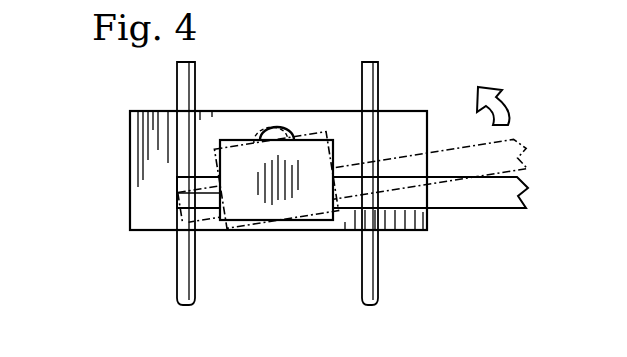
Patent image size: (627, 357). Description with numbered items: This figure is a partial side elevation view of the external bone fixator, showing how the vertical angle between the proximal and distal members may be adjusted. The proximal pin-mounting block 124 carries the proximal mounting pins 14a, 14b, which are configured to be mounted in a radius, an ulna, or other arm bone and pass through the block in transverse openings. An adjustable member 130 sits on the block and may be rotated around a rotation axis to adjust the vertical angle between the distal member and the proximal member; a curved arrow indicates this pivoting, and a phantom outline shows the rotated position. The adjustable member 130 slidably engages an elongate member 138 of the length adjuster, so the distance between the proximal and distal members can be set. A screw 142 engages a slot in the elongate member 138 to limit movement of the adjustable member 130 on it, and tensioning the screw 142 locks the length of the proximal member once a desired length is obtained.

The proximal pin-mounting block 124 is at (130, 140).
The proximal mounting pin 14a is at (195, 80).
The proximal mounting pin 14b is at (378, 82).
The adjustable member 130 is at (308, 200).
The elongate member 138 is at (457, 208).
The screw 142 is at (278, 127).